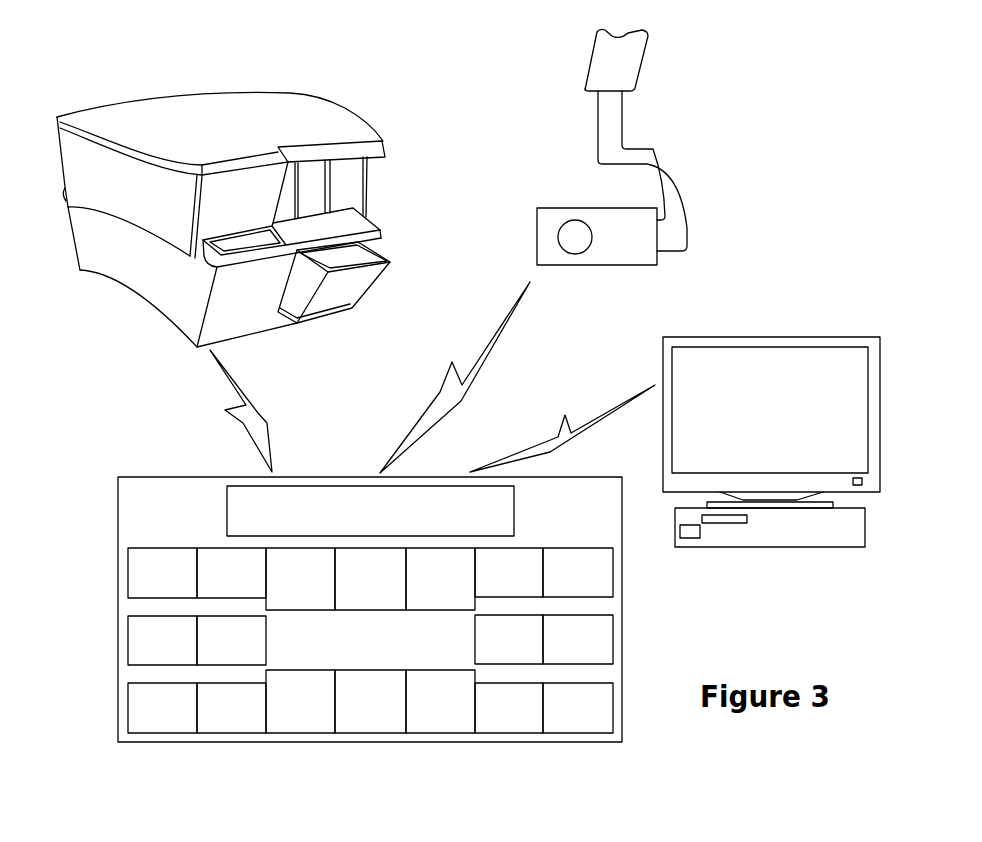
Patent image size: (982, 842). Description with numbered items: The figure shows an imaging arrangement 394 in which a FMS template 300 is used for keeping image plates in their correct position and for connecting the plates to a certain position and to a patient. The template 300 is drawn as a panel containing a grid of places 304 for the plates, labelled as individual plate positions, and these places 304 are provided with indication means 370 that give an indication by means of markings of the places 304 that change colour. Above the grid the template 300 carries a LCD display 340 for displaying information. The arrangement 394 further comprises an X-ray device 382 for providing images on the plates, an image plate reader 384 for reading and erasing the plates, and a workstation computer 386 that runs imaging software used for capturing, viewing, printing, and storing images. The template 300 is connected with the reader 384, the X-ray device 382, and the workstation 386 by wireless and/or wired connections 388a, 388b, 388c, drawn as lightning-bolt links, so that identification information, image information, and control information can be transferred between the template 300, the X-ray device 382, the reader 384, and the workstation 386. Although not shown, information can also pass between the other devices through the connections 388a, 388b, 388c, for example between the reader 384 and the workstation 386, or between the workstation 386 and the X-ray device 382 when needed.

The FMS template 300 is at (379, 583).
The places for the plates 304 is at (613, 573).
The LCD display 340 is at (222, 502).
The indication means 370 is at (615, 640).
The X-ray device 382 is at (675, 170).
The image plate reader 384 is at (282, 115).
The workstation computer 386 is at (783, 547).
The connection 388a is at (256, 410).
The connection 388b is at (485, 342).
The connection 388c is at (600, 414).
The arrangement 394 is at (803, 110).